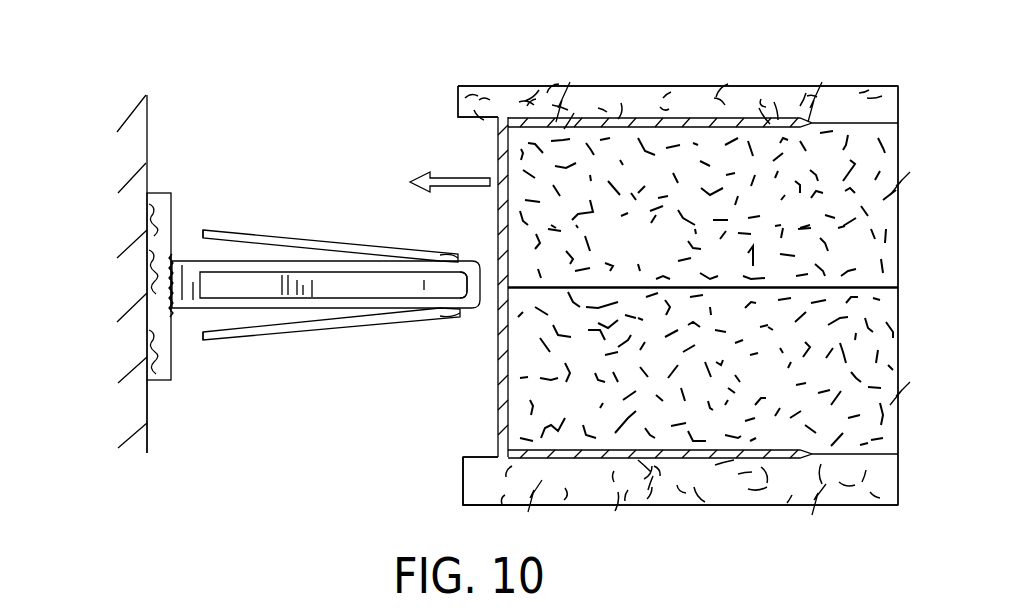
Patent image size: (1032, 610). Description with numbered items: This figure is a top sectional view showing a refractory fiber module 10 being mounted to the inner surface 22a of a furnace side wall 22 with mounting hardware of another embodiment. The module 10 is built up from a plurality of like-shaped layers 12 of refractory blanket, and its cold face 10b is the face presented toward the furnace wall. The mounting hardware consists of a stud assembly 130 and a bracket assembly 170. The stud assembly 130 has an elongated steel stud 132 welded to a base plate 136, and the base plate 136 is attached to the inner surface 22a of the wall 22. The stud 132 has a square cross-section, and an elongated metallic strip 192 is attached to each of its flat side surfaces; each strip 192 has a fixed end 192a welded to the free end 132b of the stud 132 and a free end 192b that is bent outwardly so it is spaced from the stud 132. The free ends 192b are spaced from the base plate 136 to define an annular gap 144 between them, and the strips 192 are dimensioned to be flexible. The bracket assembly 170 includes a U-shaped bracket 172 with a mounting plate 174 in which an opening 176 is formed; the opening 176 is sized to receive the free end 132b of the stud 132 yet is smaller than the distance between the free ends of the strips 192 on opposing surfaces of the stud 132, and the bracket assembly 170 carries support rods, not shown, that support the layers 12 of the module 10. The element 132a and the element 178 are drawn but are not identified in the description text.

The refractory fiber module 10 is at (646, 72).
The cold face 10b is at (463, 482).
The layers 12 is at (867, 150).
The furnace side wall 22 is at (152, 127).
The inner surface 22a is at (147, 432).
The stud assembly 130 is at (329, 208).
The stud 132 is at (253, 265).
The fastener head end 132a is at (172, 265).
The free end 132b is at (455, 307).
The base plate 136 is at (160, 215).
The annular gap 144 is at (188, 243).
The bracket assembly 170 is at (589, 86).
The U-shaped bracket 172 is at (486, 146).
The mounting plate 174 is at (500, 425).
The opening 176 is at (507, 270).
The tongue 178 is at (692, 120).
The metallic strip 192 is at (280, 232).
The fixed end 192a is at (445, 283).
The free end 192b is at (210, 285).